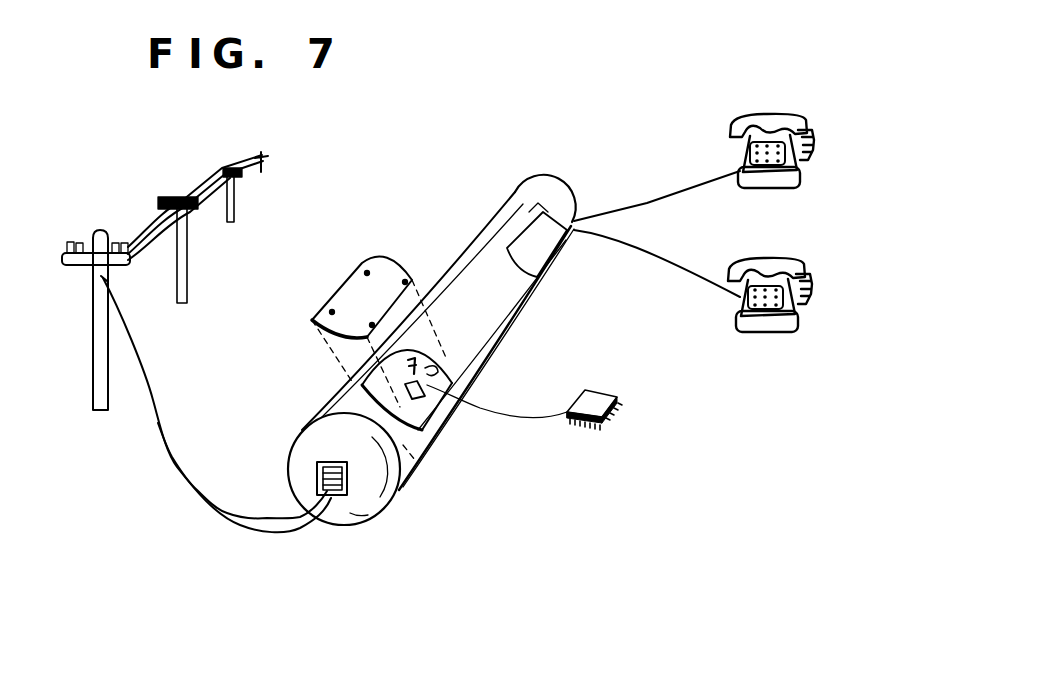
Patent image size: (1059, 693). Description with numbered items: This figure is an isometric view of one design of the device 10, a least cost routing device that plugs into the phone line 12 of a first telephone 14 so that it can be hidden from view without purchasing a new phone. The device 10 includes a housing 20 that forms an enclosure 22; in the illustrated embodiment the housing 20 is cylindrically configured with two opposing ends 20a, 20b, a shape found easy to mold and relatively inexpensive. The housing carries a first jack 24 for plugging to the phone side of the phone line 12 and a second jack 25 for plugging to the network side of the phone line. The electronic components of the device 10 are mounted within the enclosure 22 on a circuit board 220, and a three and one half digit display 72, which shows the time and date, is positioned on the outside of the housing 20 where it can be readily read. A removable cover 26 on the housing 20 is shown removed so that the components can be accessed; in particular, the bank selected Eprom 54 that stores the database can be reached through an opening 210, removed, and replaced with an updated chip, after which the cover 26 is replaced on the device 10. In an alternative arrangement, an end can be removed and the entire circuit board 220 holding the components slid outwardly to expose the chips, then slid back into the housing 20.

The device 10 is at (455, 236).
The phone line 12 is at (648, 203).
The first telephone 14 is at (766, 114).
The housing 20 is at (456, 312).
The end 20a is at (387, 510).
The end 20b is at (538, 186).
The enclosure 22 is at (447, 284).
The first jack 24 is at (576, 215).
The second jack 25 is at (330, 500).
The removable cover 26 is at (357, 290).
The bank selected Eprom 54 is at (618, 396).
The 3½ digit display 72 is at (568, 258).
The opening 210 is at (423, 413).
The circuit board 220 is at (437, 367).